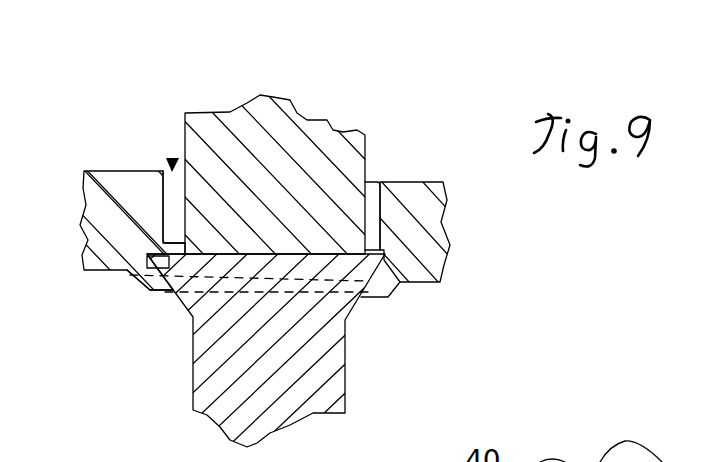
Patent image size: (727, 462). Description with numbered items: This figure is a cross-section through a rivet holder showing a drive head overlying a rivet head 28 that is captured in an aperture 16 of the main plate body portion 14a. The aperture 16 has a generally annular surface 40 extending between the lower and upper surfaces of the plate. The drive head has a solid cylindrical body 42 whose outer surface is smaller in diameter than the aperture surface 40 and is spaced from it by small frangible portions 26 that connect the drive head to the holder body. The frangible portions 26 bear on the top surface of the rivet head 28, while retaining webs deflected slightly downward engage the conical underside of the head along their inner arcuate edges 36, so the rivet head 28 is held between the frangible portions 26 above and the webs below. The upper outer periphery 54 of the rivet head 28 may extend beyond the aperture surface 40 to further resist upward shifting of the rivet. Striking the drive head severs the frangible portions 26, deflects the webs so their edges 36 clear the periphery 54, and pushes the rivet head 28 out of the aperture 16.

The main plate body portion 14a is at (112, 258).
The aperture 16 is at (172, 165).
The frangible portion 26 is at (378, 244).
The rivet head 28 is at (300, 280).
The inner arcuate edge of web 36 is at (172, 298).
The annular surface of aperture 40 is at (375, 182).
The solid cylindrical body of drive head 42 is at (267, 117).
The upper outer periphery of rivet head 54 is at (126, 271).